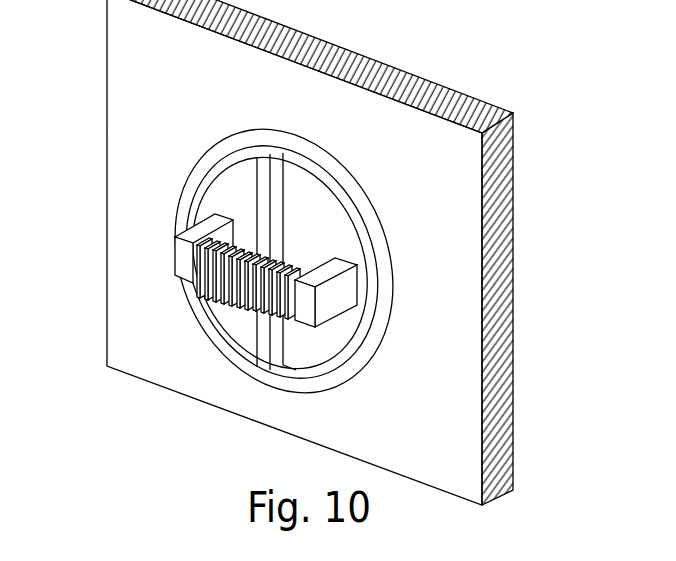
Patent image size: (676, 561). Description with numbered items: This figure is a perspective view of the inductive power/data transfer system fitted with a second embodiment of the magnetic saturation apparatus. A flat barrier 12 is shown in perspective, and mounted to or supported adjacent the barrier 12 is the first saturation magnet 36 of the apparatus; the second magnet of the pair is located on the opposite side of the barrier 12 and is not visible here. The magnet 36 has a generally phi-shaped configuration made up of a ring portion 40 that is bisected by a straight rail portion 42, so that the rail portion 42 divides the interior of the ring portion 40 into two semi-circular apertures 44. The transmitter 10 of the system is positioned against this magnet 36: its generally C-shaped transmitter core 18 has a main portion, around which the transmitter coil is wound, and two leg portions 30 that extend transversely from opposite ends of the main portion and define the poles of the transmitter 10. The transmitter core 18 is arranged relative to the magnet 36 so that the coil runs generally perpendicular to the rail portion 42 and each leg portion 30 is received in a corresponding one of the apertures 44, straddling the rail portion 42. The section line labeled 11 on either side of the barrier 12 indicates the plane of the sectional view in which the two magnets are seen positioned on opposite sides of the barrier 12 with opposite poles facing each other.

The transmitter 10 is at (166, 297).
The section line 11 is at (308, 245).
The barrier 12 is at (171, 53).
The transmitter core 18 is at (328, 334).
The leg portions 30 is at (192, 235).
The first saturation magnet 36 is at (368, 198).
The ring portion 40 is at (334, 178).
The rail portion 42 is at (278, 209).
The semi-circular apertures 44 is at (242, 166).